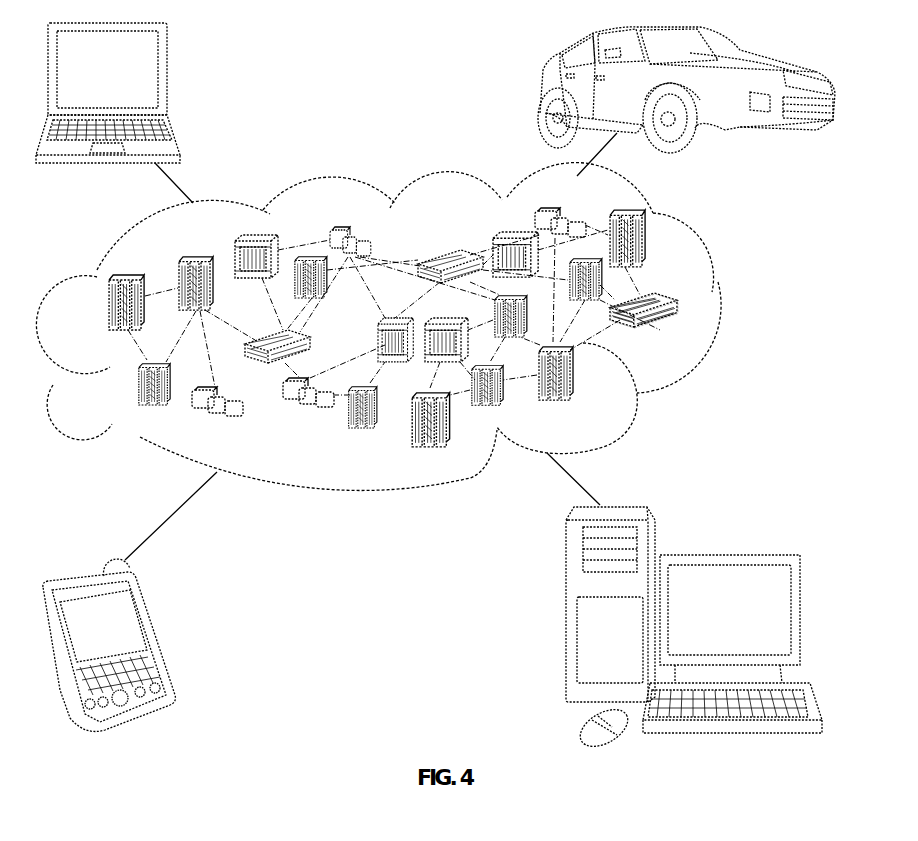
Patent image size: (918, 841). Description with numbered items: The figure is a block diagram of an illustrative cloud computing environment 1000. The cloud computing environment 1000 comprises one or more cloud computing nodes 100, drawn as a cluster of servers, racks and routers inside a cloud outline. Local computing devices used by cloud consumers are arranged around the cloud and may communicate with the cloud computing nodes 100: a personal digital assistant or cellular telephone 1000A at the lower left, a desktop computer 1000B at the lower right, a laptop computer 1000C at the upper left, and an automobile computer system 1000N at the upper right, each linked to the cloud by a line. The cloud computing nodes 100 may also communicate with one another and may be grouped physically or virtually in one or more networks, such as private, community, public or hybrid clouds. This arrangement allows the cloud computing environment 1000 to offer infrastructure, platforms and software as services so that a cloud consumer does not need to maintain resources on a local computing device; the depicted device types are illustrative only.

The cloud computing nodes 100 is at (688, 338).
The cloud computing environment 1000 is at (416, 327).
The personal digital assistant (PDA) or cellular telephone 1000A is at (158, 632).
The desktop computer 1000B is at (730, 553).
The laptop computer 1000C is at (167, 75).
The automobile computer system 1000N is at (540, 90).